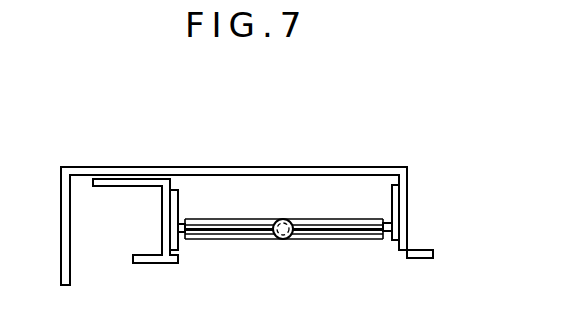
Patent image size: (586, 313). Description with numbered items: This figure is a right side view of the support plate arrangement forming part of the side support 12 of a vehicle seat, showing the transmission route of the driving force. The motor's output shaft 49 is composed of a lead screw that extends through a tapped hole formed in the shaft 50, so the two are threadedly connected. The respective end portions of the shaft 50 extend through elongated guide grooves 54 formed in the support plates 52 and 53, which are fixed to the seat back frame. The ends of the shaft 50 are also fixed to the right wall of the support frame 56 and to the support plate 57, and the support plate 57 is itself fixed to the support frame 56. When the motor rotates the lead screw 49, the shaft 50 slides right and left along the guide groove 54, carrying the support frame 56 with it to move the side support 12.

The side support 12 is at (403, 126).
The output shaft 49 is at (284, 219).
The shaft 50 is at (342, 222).
The support plate 52 is at (392, 198).
The support plate 53 is at (179, 205).
The elongated guide groove 54 is at (179, 227).
The support frame 56 is at (228, 172).
The support plate 57 is at (162, 207).